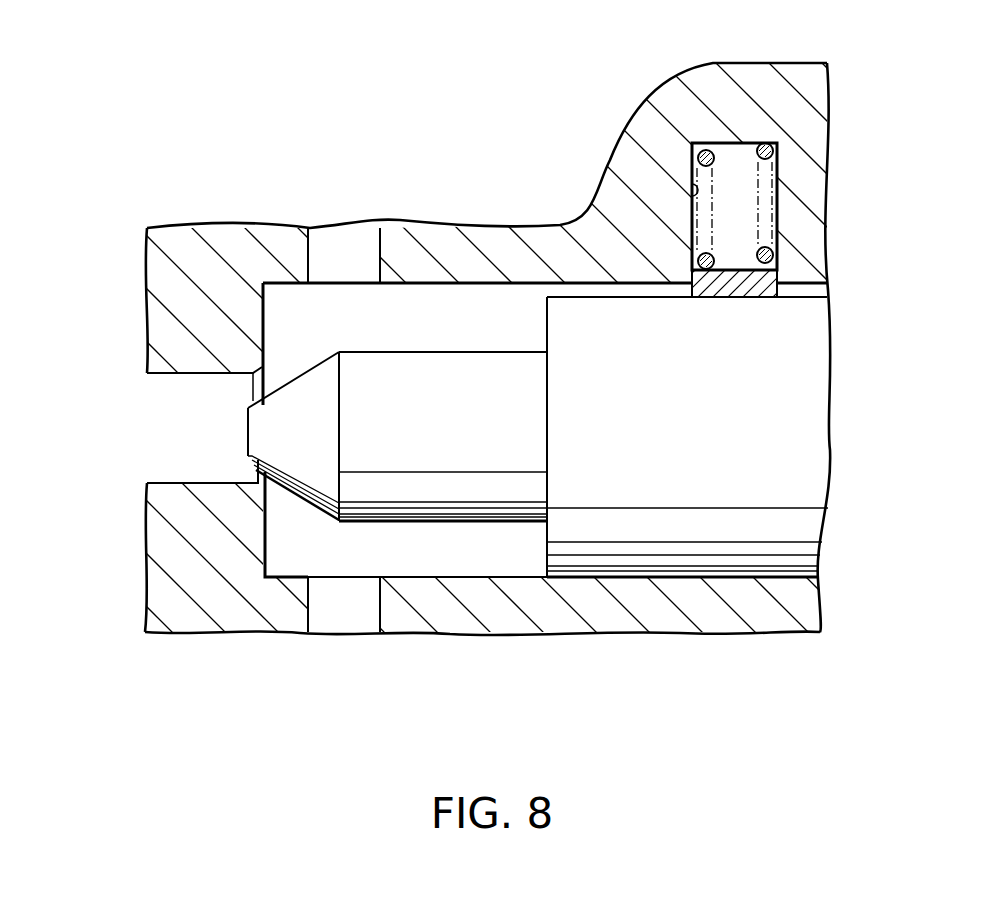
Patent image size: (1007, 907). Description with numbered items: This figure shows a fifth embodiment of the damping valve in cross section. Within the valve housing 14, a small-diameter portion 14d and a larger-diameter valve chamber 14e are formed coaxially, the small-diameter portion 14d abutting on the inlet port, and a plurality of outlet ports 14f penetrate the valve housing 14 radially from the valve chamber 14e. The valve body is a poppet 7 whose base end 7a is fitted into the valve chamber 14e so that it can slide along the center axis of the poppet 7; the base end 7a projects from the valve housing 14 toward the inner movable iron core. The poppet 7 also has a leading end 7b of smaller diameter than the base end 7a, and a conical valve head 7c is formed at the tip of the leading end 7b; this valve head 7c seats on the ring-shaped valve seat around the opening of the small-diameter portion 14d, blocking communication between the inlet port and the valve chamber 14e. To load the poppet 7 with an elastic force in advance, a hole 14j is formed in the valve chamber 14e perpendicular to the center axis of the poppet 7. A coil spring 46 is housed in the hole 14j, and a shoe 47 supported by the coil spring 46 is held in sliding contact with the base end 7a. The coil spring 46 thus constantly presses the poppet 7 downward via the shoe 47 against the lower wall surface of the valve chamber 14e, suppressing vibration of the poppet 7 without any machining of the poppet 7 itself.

The valve housing 14 is at (172, 221).
The small-diameter portion 14d is at (168, 428).
The valve chamber 14e is at (348, 318).
The outlet ports 14f is at (344, 615).
The hole 14j is at (692, 200).
The poppet 7 is at (468, 338).
The base end 7a is at (567, 292).
The leading end 7b is at (492, 524).
The valve head 7c is at (303, 500).
The coil spring 46 is at (705, 149).
The shoe 47 is at (734, 277).